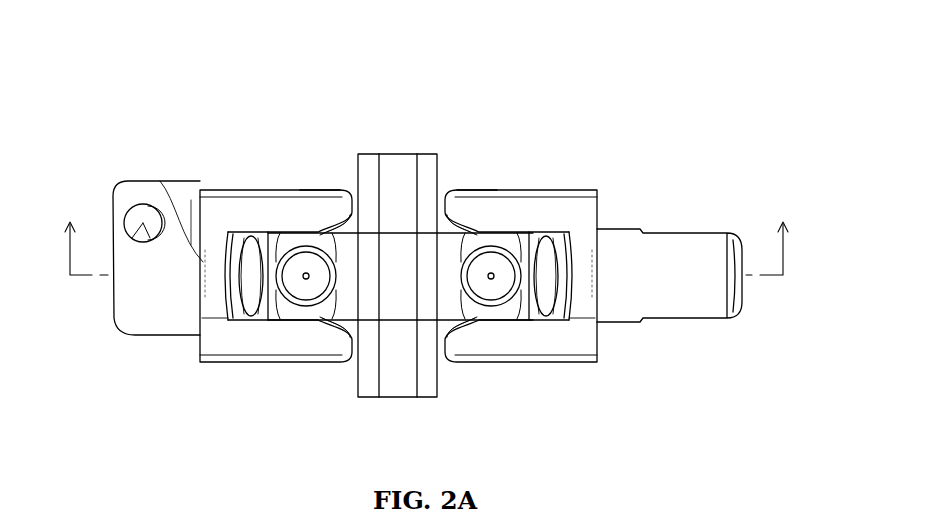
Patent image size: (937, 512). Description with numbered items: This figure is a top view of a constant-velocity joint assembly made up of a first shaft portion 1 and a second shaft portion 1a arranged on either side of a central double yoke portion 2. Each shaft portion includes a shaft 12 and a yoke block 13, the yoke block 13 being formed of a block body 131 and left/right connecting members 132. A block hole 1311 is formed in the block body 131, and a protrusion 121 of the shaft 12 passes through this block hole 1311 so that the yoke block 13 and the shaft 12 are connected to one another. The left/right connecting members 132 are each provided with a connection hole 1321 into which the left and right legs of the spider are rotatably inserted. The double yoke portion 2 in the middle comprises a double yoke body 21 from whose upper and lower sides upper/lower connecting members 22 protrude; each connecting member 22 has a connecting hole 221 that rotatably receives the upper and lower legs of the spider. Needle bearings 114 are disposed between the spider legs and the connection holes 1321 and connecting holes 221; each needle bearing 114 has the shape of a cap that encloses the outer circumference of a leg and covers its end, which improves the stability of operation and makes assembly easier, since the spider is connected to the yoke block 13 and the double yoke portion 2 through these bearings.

The first shaft portion 1 is at (175, 121).
The second shaft portion 1a is at (596, 146).
The double yoke portion 2 is at (395, 114).
The double yoke body 21 is at (397, 168).
The upper/lower connecting member 22 is at (288, 305).
The shaft 12 is at (158, 352).
The yoke block 13 is at (234, 378).
The block body 131 is at (203, 260).
The block hole 1311 is at (232, 320).
The left/right connecting member 132 is at (338, 202).
The connection hole 1321 is at (299, 188).
The protrusion 121 is at (257, 277).
The connecting hole 221 is at (290, 250).
The needle bearing 114 is at (312, 292).